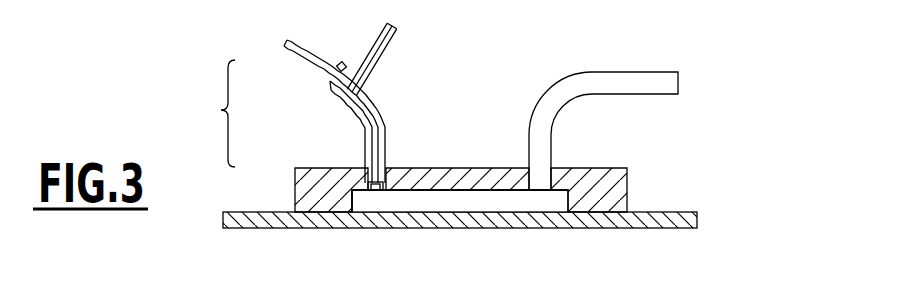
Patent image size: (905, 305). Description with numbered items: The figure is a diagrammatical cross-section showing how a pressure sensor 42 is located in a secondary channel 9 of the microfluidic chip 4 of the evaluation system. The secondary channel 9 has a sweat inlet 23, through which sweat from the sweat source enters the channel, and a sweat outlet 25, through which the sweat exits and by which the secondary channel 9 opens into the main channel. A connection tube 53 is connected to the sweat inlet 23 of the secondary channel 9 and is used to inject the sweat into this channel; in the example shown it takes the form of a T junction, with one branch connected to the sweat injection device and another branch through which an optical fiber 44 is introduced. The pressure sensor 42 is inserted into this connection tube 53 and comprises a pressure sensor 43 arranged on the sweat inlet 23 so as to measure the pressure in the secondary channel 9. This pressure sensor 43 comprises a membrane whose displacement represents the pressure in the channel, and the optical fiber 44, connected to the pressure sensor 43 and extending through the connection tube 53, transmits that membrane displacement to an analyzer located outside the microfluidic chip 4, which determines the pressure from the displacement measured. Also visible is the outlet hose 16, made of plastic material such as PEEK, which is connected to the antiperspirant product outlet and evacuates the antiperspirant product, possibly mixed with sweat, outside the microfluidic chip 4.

The microfluidic chip 4 is at (705, 206).
The secondary channel 9 is at (510, 203).
The outlet hose 16 is at (643, 81).
The sweat inlet 23 is at (372, 197).
The sweat outlet 25 is at (538, 203).
The pressure sensor 42 is at (208, 113).
The pressure sensor 43 is at (376, 182).
The optical fiber 44 is at (296, 50).
The connection tube 53 is at (398, 98).